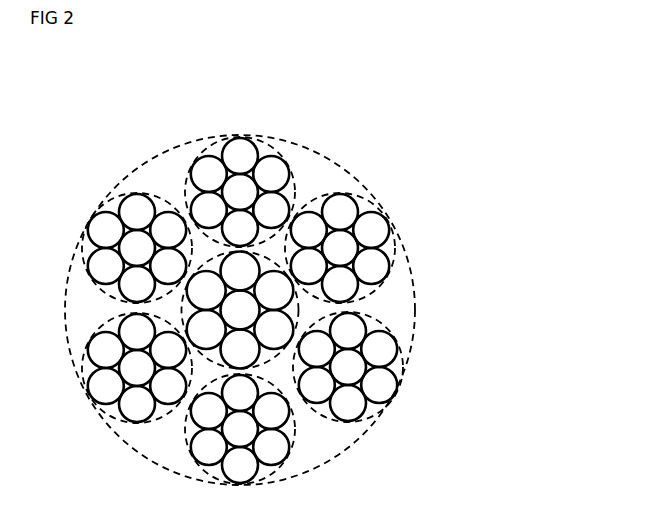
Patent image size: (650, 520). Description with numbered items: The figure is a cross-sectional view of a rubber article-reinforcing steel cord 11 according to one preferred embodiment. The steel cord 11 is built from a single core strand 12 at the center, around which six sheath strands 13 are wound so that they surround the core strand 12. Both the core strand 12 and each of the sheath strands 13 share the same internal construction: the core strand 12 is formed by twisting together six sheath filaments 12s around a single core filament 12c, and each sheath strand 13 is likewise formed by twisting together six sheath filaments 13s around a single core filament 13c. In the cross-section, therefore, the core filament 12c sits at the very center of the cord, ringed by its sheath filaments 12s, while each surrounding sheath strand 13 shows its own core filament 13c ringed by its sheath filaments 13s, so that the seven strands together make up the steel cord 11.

The steel cord 11 is at (418, 157).
The core strand 12 is at (368, 343).
The core filament 12c is at (259, 305).
The sheath filaments 12s is at (288, 316).
The sheath strands 13 is at (412, 253).
The core filament 13c is at (362, 250).
The sheath filaments 13s is at (358, 287).